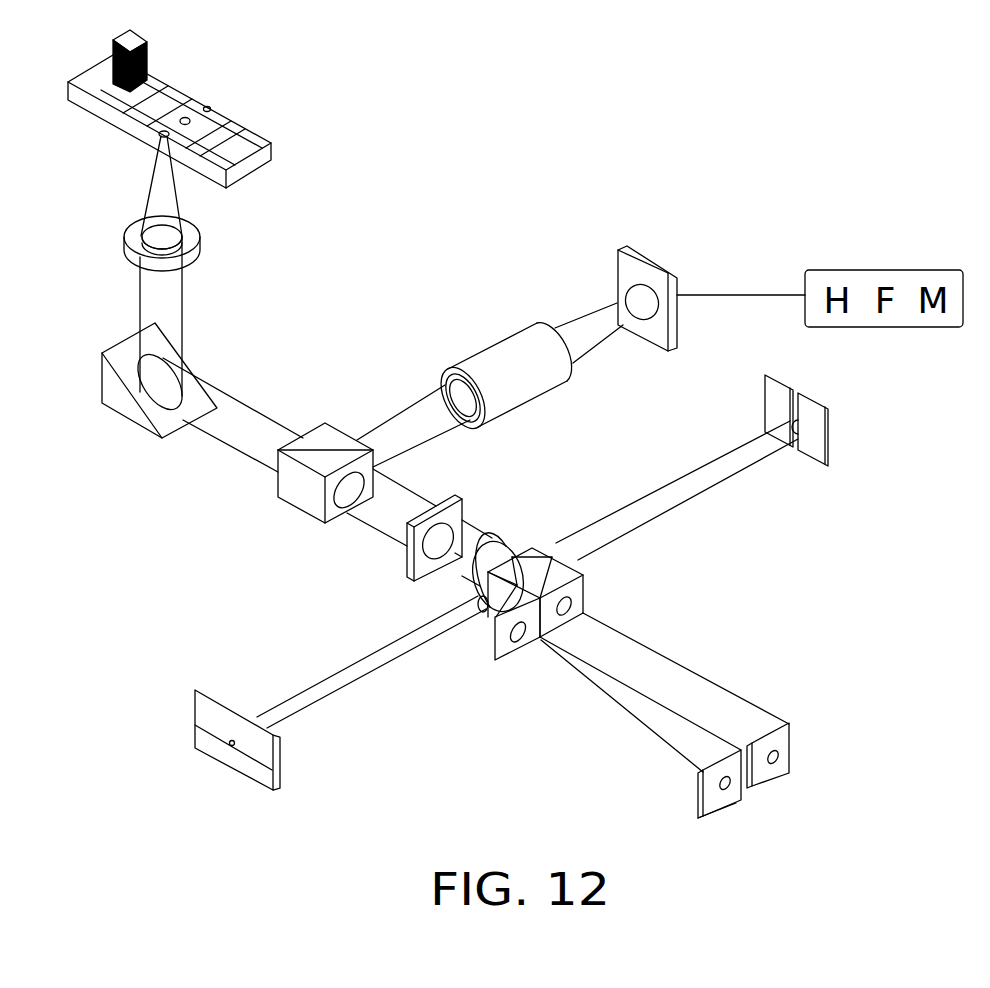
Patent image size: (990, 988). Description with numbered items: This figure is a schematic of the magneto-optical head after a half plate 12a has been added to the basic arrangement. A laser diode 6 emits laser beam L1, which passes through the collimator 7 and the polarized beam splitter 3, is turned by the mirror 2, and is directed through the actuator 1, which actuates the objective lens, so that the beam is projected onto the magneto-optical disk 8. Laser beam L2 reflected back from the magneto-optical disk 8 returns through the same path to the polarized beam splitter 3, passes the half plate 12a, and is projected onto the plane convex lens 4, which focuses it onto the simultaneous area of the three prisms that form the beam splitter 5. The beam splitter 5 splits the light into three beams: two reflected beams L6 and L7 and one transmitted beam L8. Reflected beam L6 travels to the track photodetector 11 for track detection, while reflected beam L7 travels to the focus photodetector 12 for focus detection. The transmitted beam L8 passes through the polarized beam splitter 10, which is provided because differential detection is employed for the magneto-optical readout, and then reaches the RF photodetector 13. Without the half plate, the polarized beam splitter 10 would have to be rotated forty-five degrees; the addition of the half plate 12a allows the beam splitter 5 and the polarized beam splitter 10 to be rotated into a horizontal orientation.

The magneto-optical disk 8 is at (242, 127).
The actuator 1 is at (132, 232).
The mirror 2 is at (112, 385).
The polarized beam splitter 3 is at (330, 437).
The collimator 7 is at (508, 355).
The laser beam L1 is at (598, 327).
The laser diode 6 is at (662, 278).
The reflected laser beam L2 is at (387, 520).
The half plate 12a is at (425, 567).
The plane convex lens 4 is at (502, 543).
The beam splitter 5 is at (540, 553).
The polarized beam splitter 10 is at (508, 645).
The reflected beam L7 is at (650, 507).
The focus photodetector 12 is at (820, 427).
The reflected beam L6 is at (357, 665).
The track photodetector 11 is at (208, 713).
The transmitted beam L8 is at (632, 715).
The RF photodetector 13 is at (740, 803).